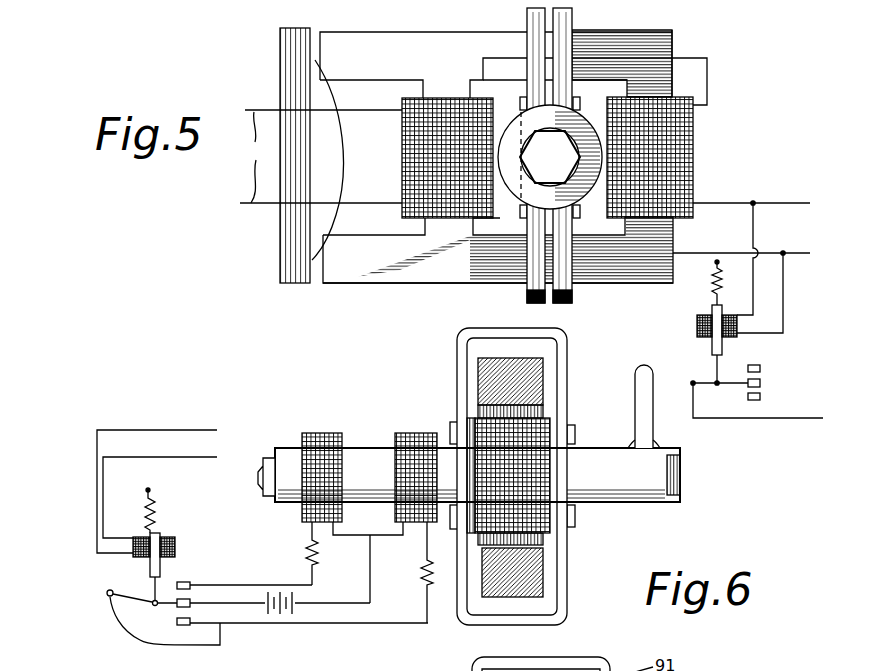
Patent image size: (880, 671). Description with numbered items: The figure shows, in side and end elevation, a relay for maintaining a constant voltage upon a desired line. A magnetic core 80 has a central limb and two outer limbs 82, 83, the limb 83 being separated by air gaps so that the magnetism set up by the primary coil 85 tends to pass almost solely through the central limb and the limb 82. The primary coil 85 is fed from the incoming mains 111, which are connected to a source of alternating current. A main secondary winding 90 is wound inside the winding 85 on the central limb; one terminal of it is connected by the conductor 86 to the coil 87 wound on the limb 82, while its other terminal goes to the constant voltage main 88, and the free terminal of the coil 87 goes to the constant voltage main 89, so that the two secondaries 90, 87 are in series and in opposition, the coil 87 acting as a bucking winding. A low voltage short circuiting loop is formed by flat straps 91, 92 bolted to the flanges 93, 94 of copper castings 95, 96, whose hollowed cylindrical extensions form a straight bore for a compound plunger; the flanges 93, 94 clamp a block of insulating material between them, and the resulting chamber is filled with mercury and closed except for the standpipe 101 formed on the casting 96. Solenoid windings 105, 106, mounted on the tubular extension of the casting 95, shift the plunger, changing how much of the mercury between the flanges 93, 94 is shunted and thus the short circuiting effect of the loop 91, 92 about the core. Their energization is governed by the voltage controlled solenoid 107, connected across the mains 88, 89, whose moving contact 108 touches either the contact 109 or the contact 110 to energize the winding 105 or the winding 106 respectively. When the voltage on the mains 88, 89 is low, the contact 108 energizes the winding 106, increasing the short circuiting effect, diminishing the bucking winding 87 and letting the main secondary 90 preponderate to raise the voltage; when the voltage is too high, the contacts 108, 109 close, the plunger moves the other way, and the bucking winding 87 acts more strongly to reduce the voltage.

In FIG. 5, the magnetic core 80 is at (680, 32).
In FIG. 6, the magnetic core 80 is at (567, 353).
In FIG. 5, the limb 82 is at (657, 90).
In FIG. 5, the limb 83 is at (300, 95).
In FIG. 5, the primary coil 85 is at (435, 148).
In FIG. 5, the conductor 86 is at (605, 55).
In FIG. 5, the coil 87 is at (673, 130).
In FIG. 5, the constant voltage main 88 is at (345, 160).
In FIG. 6, the constant voltage main 88 is at (217, 457).
In FIG. 5, the constant voltage main 89 is at (790, 203).
In FIG. 6, the constant voltage main 89 is at (195, 414).
In FIG. 5, the secondary winding 90 is at (448, 230).
In FIG. 5, the flat strap 91 is at (545, 20).
In FIG. 6, the flat strap 91 is at (470, 366).
In FIG. 5, the flat strap 92 is at (545, 293).
In FIG. 6, the flat strap 92 is at (565, 580).
In FIG. 6, the flange 93 is at (468, 523).
In FIG. 6, the flange 94 is at (568, 507).
In FIG. 6, the copper casting 95 is at (358, 465).
In FIG. 6, the copper casting 96 is at (623, 487).
In FIG. 6, the standpipe 101 is at (645, 397).
In FIG. 5, the solenoid winding 105 is at (513, 180).
In FIG. 6, the solenoid winding 105 is at (330, 413).
In FIG. 6, the solenoid winding 106 is at (430, 418).
In FIG. 5, the voltage controlled solenoid 107 is at (697, 320).
In FIG. 6, the voltage controlled solenoid 107 is at (175, 547).
In FIG. 5, the moving contact 108 is at (760, 383).
In FIG. 6, the moving contact 108 is at (190, 603).
In FIG. 5, the contact 109 is at (760, 368).
In FIG. 6, the contact 109 is at (190, 583).
In FIG. 5, the contact 110 is at (760, 397).
In FIG. 6, the contact 110 is at (223, 643).
In FIG. 5, the incoming mains 111 is at (319, 156).